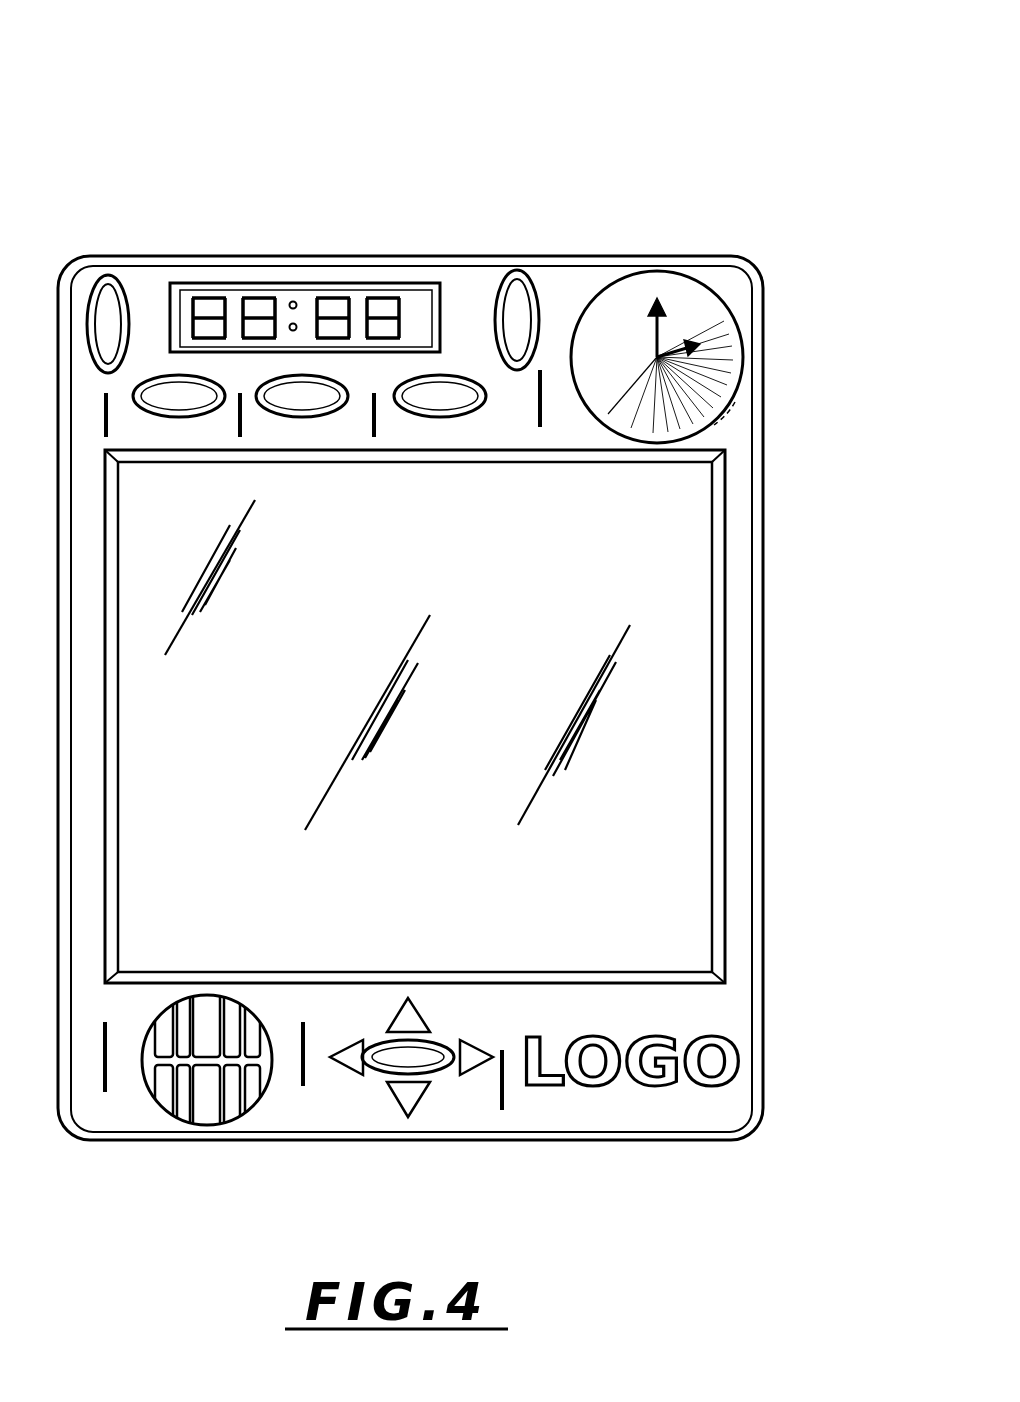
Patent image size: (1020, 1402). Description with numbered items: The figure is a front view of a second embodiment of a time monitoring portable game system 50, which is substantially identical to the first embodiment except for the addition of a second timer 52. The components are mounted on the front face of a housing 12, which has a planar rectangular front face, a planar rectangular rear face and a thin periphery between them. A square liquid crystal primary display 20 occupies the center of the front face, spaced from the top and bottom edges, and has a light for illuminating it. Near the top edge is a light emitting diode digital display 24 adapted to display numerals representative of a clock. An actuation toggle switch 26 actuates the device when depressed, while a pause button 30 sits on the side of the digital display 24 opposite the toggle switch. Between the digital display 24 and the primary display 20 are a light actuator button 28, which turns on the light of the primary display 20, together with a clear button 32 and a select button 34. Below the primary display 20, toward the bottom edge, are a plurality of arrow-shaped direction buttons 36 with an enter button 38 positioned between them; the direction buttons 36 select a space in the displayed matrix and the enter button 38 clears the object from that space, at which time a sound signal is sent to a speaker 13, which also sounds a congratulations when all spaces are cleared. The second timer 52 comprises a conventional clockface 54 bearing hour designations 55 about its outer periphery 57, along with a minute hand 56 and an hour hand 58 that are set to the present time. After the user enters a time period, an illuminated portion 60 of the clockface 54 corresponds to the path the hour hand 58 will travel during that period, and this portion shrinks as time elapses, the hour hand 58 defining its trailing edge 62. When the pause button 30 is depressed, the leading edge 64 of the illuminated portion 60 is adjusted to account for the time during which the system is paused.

The time monitoring portable game system 50 is at (262, 118).
The housing 12 is at (740, 260).
The speaker 13 is at (203, 1105).
The liquid crystal primary display 20 is at (685, 522).
The light emitting diode digital display 24 is at (357, 278).
The actuation toggle switch 26 is at (128, 275).
The light actuator button 28 is at (443, 376).
The pause button 30 is at (527, 277).
The clear button 32 is at (140, 378).
The select button 34 is at (278, 378).
The direction buttons 36 is at (407, 1117).
The enter button 38 is at (422, 1062).
The second timer 52 is at (612, 275).
The clockface 54 is at (600, 350).
The hour designations 55 is at (656, 300).
The minute hand 56 is at (635, 372).
The outer periphery 57 is at (562, 364).
The hour hand 58 is at (740, 395).
The illuminated portion 60 is at (719, 428).
The trailing edge 62 is at (700, 340).
The leading edge 64 is at (663, 428).